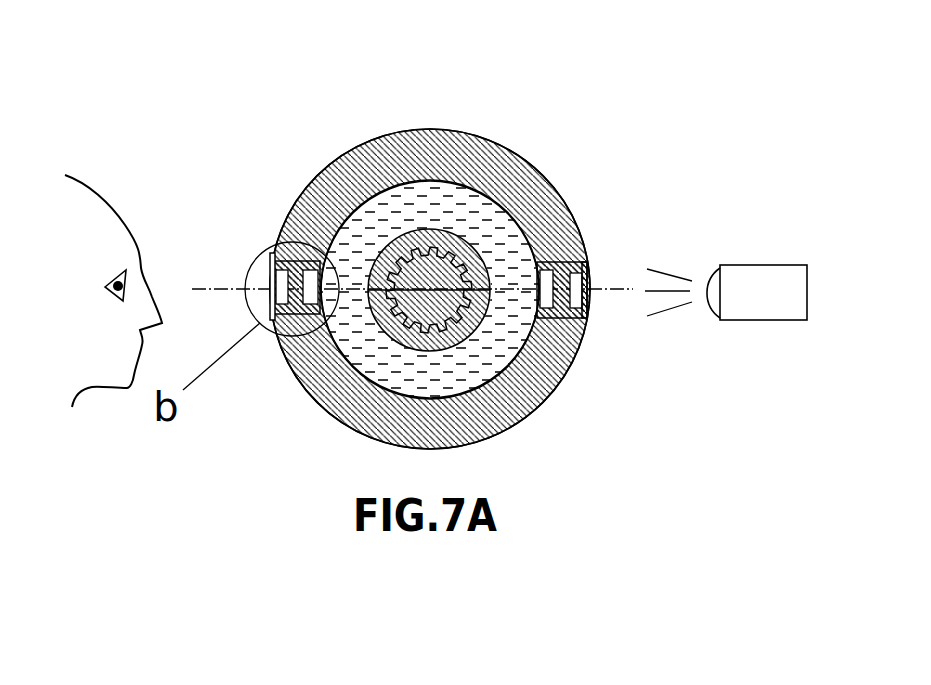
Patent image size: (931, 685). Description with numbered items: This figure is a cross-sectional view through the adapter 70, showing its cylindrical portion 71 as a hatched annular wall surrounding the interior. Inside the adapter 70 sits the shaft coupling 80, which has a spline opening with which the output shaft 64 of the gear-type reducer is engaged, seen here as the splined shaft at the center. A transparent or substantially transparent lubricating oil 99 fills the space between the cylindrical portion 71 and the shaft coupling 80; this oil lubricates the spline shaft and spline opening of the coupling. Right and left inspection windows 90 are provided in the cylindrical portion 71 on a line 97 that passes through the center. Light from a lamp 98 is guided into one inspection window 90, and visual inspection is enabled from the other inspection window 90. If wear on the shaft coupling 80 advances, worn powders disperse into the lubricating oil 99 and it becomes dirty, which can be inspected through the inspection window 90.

The adapter 70 is at (542, 130).
The cylindrical portion 71 is at (421, 160).
The lubricating oil 99 is at (383, 227).
The line 97 is at (513, 290).
The shaft coupling 80 is at (393, 333).
The output shaft 64 is at (432, 287).
The inspection window 90 is at (258, 272).
The lamp 98 is at (762, 291).